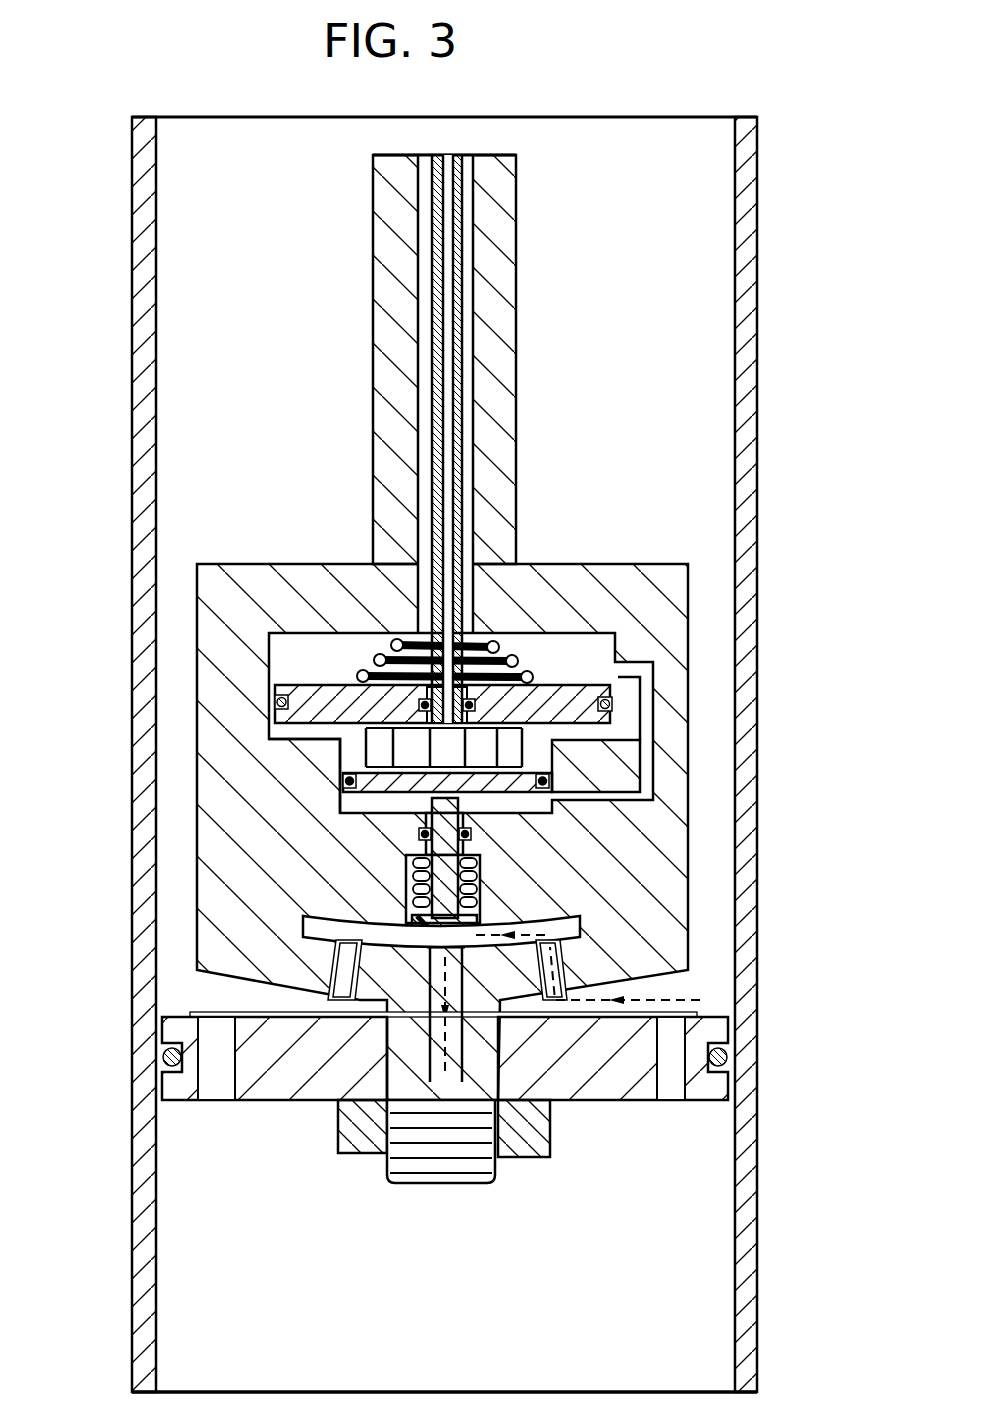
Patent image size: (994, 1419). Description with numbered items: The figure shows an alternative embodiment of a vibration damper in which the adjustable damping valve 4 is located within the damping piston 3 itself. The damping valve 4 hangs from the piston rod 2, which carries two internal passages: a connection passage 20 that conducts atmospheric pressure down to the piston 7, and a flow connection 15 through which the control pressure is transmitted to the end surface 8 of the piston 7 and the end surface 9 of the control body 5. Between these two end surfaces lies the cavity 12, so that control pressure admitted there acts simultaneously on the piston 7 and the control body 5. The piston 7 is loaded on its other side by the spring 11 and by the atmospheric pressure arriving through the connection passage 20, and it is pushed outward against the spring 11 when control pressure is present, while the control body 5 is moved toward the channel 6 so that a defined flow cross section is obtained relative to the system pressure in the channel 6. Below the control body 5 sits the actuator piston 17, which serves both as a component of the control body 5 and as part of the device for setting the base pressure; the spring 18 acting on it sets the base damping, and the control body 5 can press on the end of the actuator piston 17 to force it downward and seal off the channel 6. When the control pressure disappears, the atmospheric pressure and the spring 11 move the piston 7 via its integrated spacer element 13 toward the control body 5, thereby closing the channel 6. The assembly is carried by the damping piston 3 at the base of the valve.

The piston rod 2 is at (498, 235).
The damping piston 3 is at (633, 1047).
The damping valve 4 is at (700, 662).
The control body 5 is at (342, 763).
The channel 6 is at (452, 1082).
The piston 7 is at (572, 702).
The end surface of the piston 8 is at (268, 734).
The end surface of the control body 9 is at (528, 772).
The spring 11 is at (514, 650).
The cavity 12 is at (352, 742).
The spacer element 13 is at (510, 752).
The flow connection 15 is at (447, 312).
The actuator piston 17 is at (447, 880).
The spring 18 is at (472, 890).
The connection passage 20 is at (467, 365).